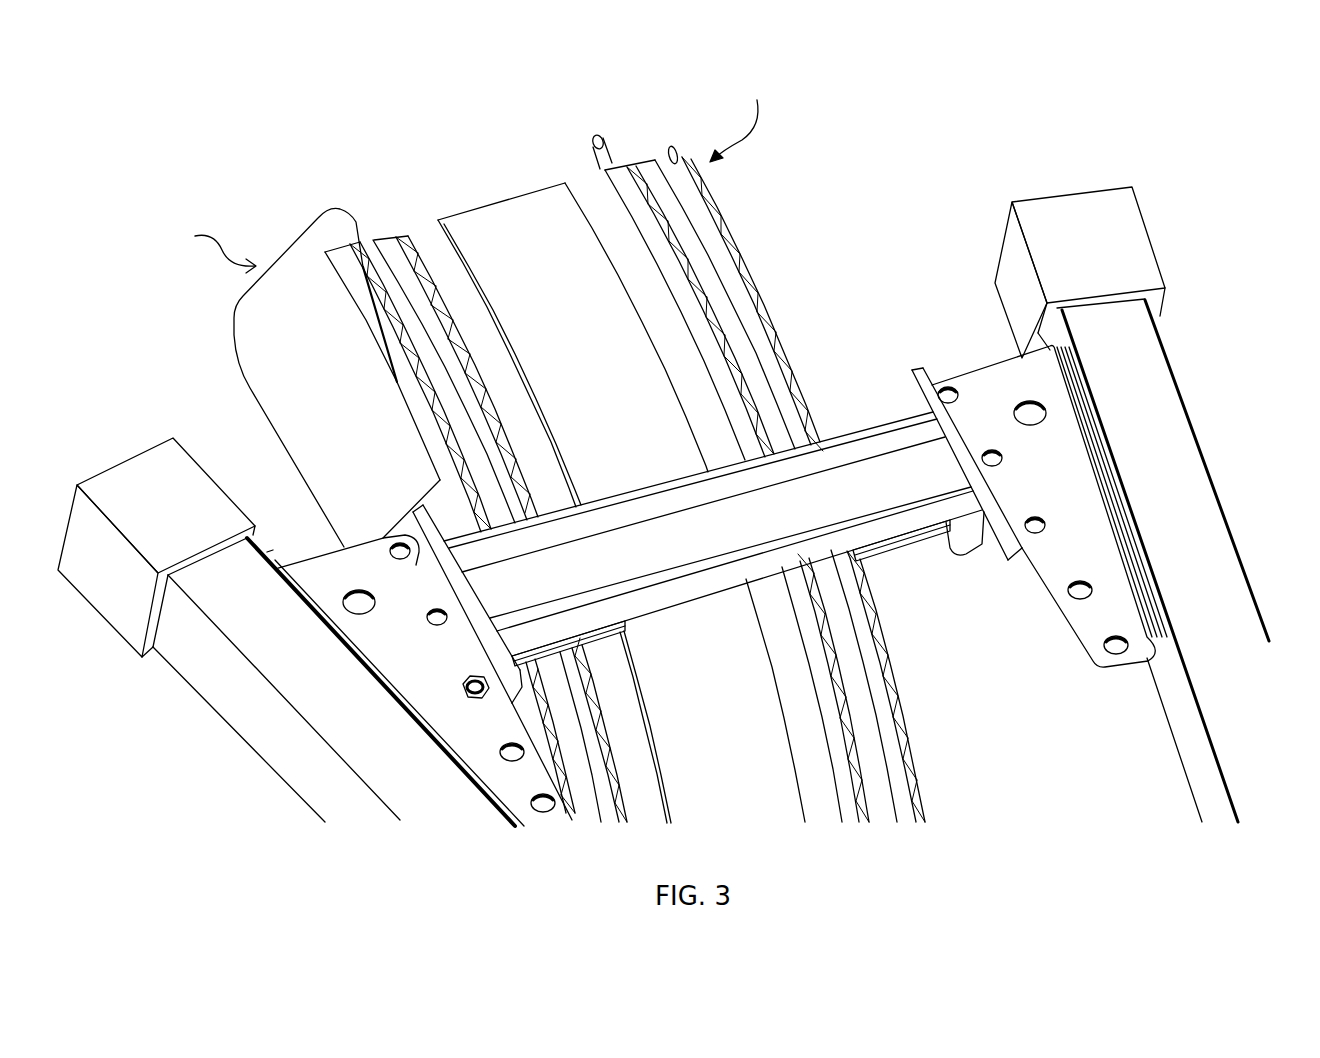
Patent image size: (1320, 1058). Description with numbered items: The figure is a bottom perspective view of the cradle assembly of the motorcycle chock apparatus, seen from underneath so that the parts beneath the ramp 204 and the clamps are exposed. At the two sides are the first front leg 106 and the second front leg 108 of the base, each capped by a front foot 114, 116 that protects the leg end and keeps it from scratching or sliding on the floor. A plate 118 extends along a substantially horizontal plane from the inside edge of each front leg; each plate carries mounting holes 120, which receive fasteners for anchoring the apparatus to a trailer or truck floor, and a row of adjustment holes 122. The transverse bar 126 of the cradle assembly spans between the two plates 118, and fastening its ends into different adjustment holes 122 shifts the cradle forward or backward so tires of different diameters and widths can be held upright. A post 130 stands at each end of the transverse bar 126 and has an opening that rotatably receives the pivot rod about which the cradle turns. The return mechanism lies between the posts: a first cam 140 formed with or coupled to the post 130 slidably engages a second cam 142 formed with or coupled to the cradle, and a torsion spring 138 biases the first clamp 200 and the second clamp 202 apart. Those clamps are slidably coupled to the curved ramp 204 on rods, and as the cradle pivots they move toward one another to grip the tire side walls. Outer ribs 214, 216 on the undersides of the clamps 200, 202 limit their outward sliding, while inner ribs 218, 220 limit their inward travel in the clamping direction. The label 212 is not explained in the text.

The first front leg 106 is at (1126, 431).
The second front leg 108 is at (300, 711).
The front foot 114 is at (1063, 256).
The front foot 116 is at (118, 518).
The plate 118 is at (390, 676).
The mounting holes 120 is at (350, 596).
The adjustment holes 122 is at (400, 560).
The transverse bar 126 is at (713, 534).
The post 130 is at (963, 555).
The torsion spring 138 is at (733, 603).
The first cam 140 is at (930, 548).
The second cam 142 is at (626, 628).
The first clamp 200 is at (206, 251).
The second clamp 202 is at (741, 117).
The ramp 204 is at (542, 324).
The shield panel 212 is at (262, 351).
The outer rib 214 is at (340, 260).
The outer rib 216 is at (707, 223).
The inner rib 218 is at (390, 247).
The inner rib 220 is at (623, 178).